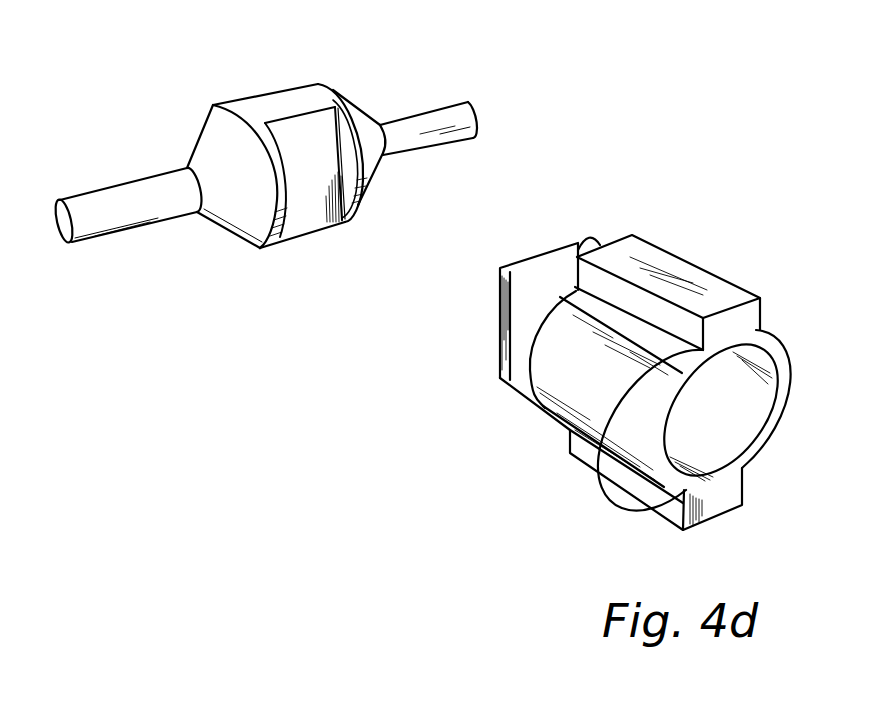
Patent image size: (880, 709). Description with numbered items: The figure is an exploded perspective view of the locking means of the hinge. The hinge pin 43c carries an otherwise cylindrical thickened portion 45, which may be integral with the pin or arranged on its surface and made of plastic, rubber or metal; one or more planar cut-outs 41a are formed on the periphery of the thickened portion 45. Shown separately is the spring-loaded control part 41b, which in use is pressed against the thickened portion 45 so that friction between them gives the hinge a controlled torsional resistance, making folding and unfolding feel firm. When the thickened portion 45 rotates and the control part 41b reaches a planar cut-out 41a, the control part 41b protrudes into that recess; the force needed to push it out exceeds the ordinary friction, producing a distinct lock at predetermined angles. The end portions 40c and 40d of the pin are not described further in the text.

The thickened portion 45 is at (281, 100).
The hinge pin 43c is at (450, 120).
The conical portion 40d is at (377, 163).
The conical portion 40c is at (250, 198).
The planar cut-out 41a is at (308, 212).
The control part 41b is at (508, 318).